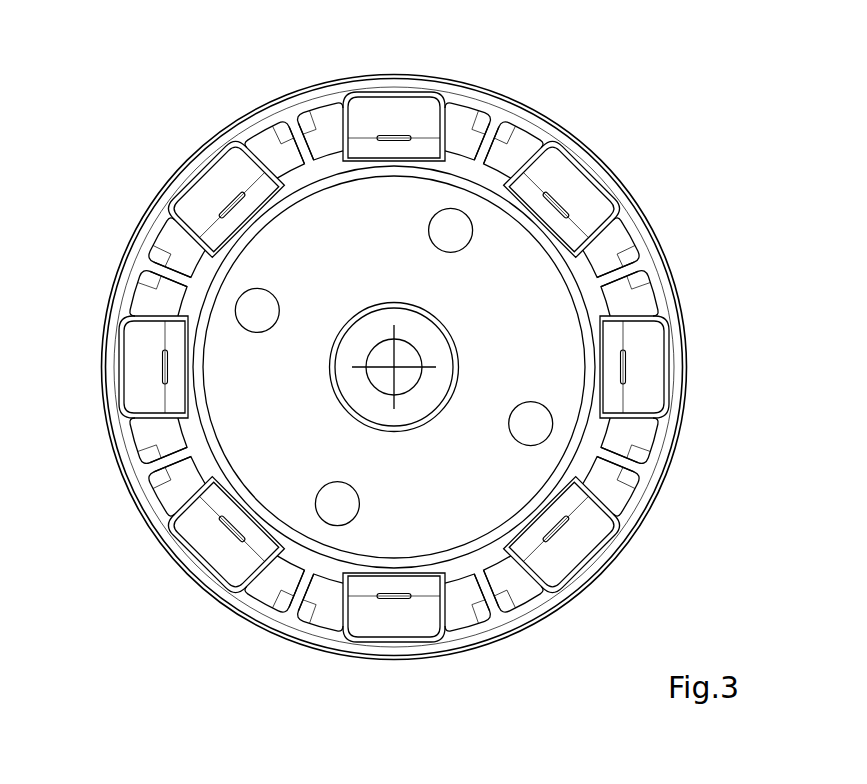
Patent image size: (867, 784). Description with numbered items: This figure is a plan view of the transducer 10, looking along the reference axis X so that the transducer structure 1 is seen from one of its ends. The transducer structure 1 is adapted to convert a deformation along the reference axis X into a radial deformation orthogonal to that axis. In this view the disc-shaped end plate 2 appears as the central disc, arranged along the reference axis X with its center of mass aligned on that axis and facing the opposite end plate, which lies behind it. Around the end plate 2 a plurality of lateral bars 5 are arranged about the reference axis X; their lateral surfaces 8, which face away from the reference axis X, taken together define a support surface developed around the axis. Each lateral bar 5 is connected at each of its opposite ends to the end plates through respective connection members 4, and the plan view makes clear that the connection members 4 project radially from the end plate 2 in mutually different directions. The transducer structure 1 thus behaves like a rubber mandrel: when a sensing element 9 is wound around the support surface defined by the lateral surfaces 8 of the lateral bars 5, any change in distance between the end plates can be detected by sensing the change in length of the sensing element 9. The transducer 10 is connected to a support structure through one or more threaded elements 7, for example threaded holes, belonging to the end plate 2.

The transducer structure 1 is at (565, 608).
The end plate 2 is at (512, 300).
The connection members 4 is at (608, 368).
The lateral bars 5 is at (617, 230).
The threaded elements 7 is at (466, 212).
The lateral surfaces 8 is at (452, 82).
The sensing element 9 is at (288, 100).
The transducer 10 is at (120, 132).
The reference axis X is at (394, 367).